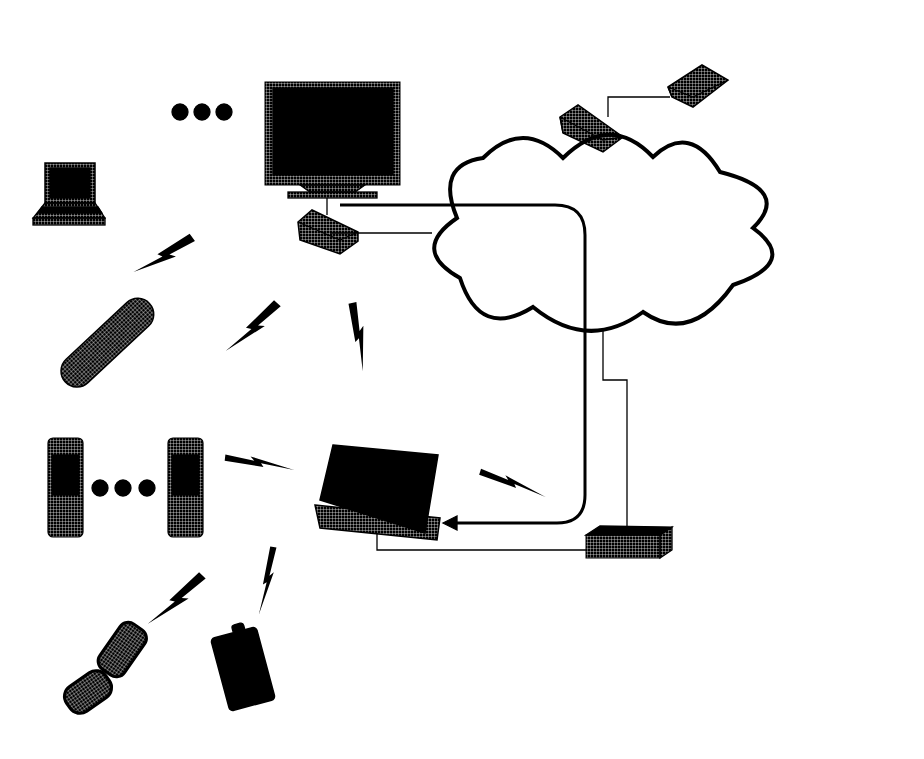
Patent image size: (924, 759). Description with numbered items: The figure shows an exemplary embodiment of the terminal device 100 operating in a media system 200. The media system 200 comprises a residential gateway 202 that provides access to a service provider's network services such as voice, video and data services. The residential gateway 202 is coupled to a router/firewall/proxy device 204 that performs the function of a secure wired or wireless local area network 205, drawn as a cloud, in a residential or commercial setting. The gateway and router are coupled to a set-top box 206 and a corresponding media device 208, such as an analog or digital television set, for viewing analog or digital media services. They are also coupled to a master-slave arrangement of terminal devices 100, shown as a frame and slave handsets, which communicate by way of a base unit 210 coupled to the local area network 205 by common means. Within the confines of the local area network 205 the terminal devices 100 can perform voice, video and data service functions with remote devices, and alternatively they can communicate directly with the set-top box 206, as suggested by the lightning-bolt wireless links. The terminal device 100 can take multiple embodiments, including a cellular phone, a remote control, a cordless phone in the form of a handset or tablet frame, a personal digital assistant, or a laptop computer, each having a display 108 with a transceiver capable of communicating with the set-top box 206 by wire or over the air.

The terminal device 100 is at (58, 167).
The display 108 is at (72, 360).
The media system 200 is at (570, 680).
The residential gateway 202 is at (700, 77).
The router/firewall/proxy device 204 is at (573, 113).
The local area network 205 is at (753, 268).
The set-top box 206 is at (302, 238).
The media device 208 is at (265, 125).
The base unit 210 is at (670, 552).